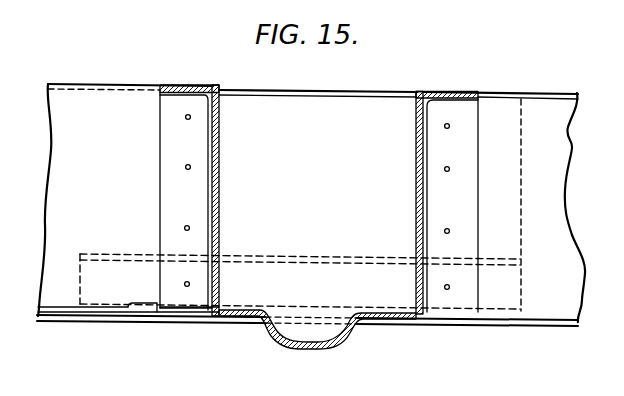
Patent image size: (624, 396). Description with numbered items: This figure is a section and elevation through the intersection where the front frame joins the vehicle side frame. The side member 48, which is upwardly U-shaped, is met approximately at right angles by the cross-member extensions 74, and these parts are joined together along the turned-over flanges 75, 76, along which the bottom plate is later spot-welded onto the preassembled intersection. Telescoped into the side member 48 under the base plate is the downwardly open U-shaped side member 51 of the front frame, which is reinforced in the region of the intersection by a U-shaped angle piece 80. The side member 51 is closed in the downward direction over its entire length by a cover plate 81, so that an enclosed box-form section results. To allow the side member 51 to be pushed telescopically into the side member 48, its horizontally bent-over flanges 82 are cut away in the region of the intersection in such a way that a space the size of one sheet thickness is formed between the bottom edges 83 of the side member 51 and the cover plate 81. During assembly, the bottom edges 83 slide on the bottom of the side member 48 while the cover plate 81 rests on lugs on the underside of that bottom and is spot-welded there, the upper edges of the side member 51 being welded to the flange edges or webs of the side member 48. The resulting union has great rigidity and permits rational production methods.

The side member 48 is at (554, 293).
The side member of the front frame 51 is at (522, 157).
The cross-member extension 74 is at (220, 140).
The turned-over flange 75 is at (190, 85).
The turned-over flange 76 is at (354, 90).
The U-shaped angle piece 80 is at (290, 257).
The cover plate 81 is at (452, 325).
The horizontally bent-over flange 82 is at (112, 308).
The bottom edge 83 is at (145, 307).